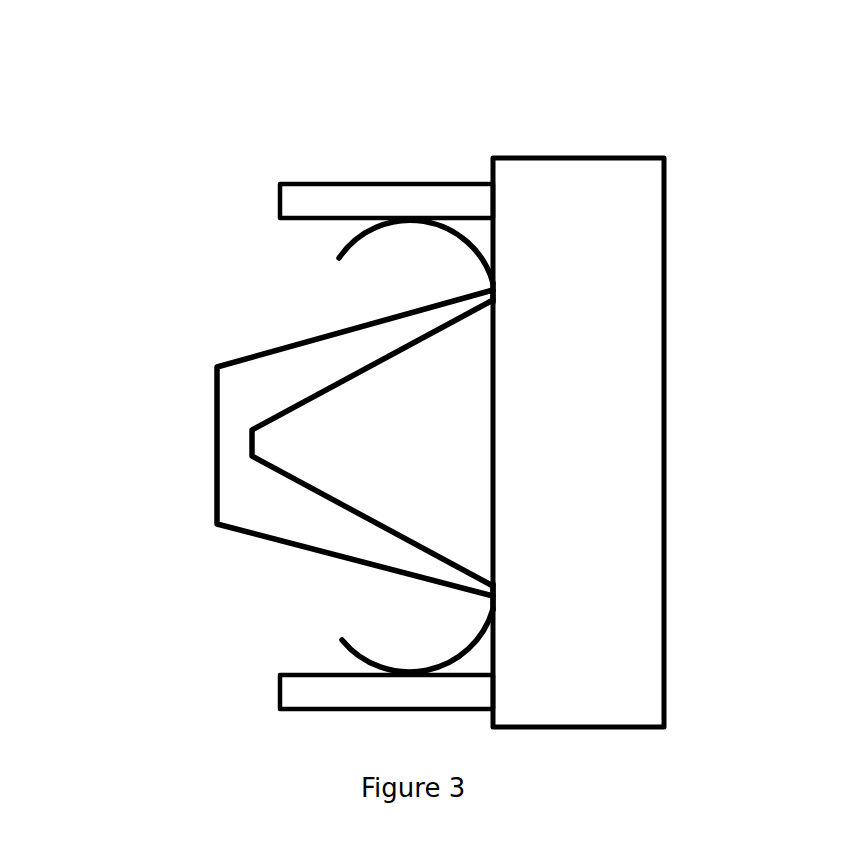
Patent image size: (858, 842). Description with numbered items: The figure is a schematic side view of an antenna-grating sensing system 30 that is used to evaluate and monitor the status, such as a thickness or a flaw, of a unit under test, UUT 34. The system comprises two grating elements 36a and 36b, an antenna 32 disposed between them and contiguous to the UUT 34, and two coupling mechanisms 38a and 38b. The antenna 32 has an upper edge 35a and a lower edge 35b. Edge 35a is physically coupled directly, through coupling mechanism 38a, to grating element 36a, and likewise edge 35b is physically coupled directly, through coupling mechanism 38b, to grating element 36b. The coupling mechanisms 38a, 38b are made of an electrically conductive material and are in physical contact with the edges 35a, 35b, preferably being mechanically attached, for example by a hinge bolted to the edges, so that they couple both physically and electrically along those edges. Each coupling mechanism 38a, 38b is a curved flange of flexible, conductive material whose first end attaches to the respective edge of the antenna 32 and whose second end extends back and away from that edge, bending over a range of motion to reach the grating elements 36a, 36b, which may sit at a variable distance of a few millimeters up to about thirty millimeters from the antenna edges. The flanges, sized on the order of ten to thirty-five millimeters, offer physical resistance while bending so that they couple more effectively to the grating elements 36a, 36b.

The antenna-grating sensing system 30 is at (359, 103).
The antenna 32 is at (200, 437).
The UUT 34 is at (673, 415).
The edge 35a is at (488, 286).
The edge 35b is at (488, 607).
The grating element 36a is at (294, 175).
The grating element 36b is at (270, 688).
The coupling mechanism 38a is at (335, 247).
The coupling mechanism 38b is at (335, 650).